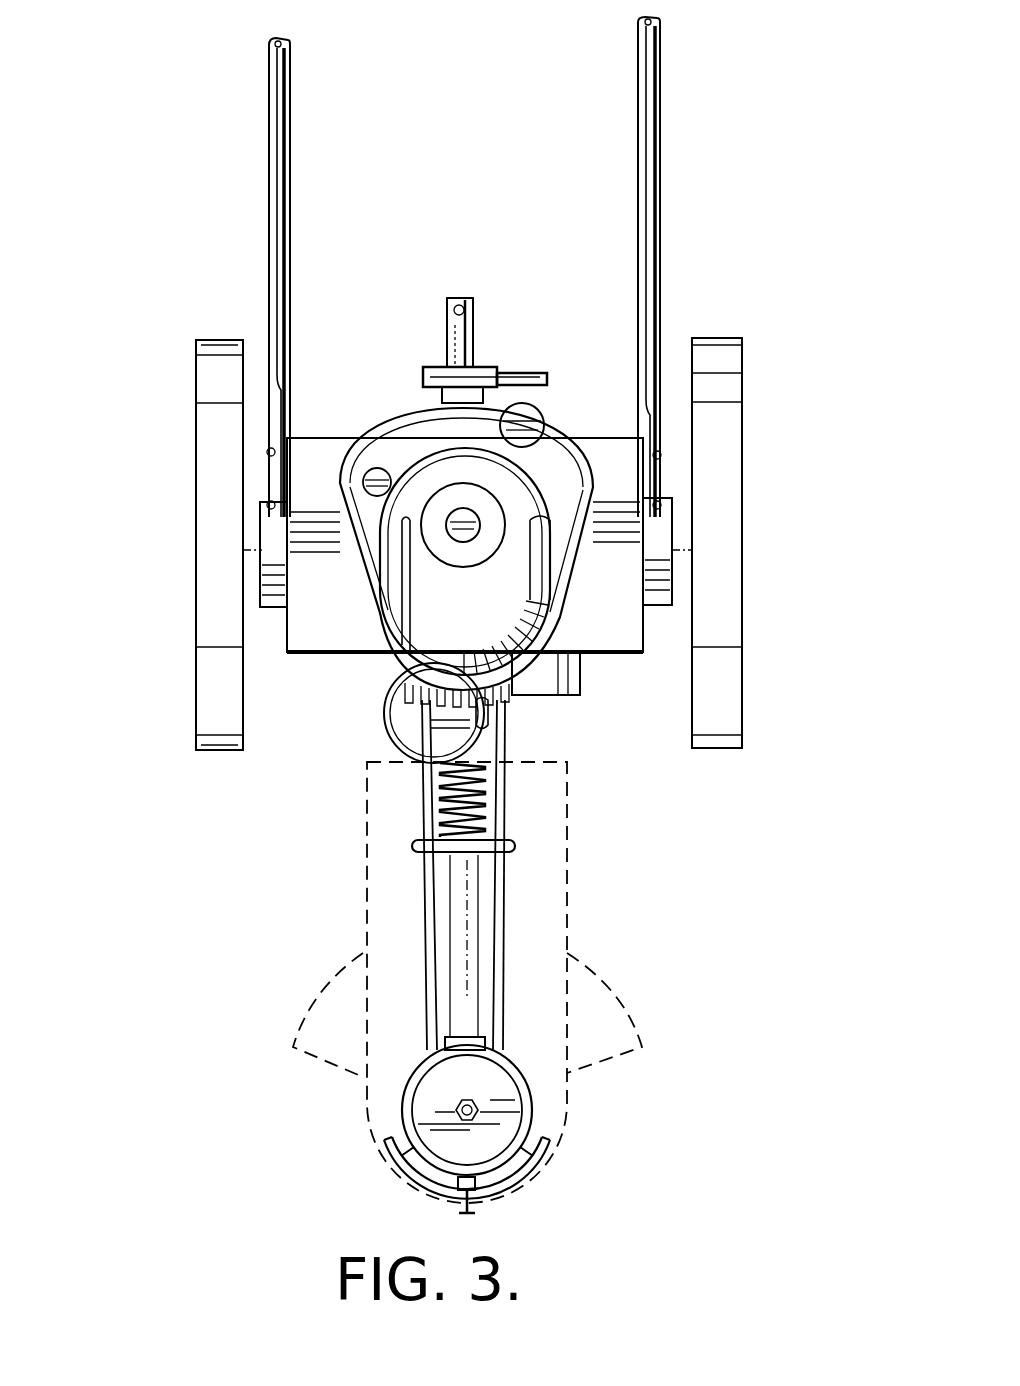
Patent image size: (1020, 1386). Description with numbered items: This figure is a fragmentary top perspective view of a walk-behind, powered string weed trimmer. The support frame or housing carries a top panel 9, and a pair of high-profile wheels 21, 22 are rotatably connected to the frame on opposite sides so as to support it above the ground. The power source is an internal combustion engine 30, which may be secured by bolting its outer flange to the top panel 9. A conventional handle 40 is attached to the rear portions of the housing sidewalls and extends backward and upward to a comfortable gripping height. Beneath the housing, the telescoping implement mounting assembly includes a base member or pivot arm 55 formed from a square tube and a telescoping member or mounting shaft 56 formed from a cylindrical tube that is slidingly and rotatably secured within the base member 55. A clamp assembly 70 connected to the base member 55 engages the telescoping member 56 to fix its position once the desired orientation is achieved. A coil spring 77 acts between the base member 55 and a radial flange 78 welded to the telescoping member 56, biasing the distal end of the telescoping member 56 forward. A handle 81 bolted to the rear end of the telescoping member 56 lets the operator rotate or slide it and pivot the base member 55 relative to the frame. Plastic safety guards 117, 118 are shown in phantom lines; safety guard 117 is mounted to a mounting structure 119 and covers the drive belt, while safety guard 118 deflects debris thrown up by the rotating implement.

The top panel 9 is at (340, 623).
The high-profile wheel 21 is at (215, 340).
The high-profile wheel 22 is at (723, 338).
The internal combustion engine 30 is at (483, 636).
The handle 40 is at (692, 170).
The base member 55 is at (500, 395).
The telescoping member 56 is at (460, 888).
The clamp assembly 70 is at (413, 373).
The coil spring 77 is at (483, 807).
The radial flange 78 is at (510, 853).
The handle 81 is at (460, 305).
The safety guard 117 is at (567, 886).
The safety guard 118 is at (603, 973).
The mounting structure 119 is at (520, 1183).